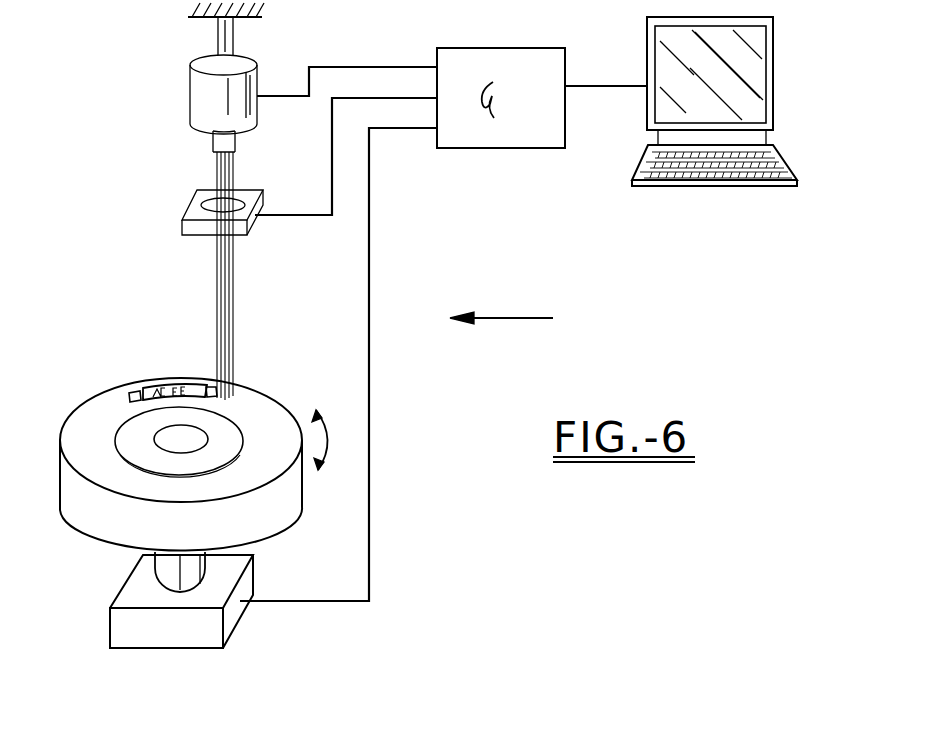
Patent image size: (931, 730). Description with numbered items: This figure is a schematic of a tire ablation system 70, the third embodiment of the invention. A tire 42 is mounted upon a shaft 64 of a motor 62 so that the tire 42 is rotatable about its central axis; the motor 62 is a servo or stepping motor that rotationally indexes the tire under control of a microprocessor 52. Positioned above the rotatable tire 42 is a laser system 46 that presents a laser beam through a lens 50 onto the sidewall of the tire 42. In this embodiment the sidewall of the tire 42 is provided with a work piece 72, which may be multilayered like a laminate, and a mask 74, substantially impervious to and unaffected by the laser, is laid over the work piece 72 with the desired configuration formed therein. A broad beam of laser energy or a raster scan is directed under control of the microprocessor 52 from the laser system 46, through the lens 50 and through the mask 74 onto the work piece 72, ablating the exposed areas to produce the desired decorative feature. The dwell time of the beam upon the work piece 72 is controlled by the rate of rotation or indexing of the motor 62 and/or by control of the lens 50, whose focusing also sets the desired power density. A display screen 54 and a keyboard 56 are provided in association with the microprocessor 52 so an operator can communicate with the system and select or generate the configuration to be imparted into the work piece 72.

The tire 42 is at (82, 402).
The laser system 46 is at (190, 96).
The lens 50 is at (190, 206).
The microprocessor 52 is at (493, 148).
The display screen 54 is at (775, 70).
The keyboard 56 is at (787, 155).
The motor 62 is at (112, 617).
The shaft 64 is at (160, 568).
The tire ablation system 70 is at (523, 319).
The work piece 72 is at (135, 392).
The mask 74 is at (165, 387).